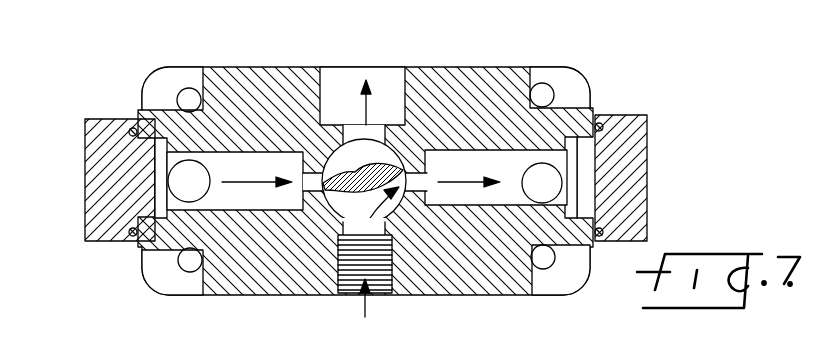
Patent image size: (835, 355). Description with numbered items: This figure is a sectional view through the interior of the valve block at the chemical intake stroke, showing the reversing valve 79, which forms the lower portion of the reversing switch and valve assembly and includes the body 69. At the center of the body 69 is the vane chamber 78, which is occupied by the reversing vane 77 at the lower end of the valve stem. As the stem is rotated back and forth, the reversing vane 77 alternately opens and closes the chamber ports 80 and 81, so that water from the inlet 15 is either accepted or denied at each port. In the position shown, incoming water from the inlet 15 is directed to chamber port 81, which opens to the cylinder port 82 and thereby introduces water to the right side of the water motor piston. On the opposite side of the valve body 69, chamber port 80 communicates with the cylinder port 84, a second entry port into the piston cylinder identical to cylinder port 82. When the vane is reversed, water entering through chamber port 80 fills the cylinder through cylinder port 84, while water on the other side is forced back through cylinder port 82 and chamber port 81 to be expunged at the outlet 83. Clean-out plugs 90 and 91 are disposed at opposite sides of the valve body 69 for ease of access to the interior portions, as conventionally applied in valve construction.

The inlet 15 is at (383, 294).
The body 69 is at (495, 282).
The reversing vane 77 is at (382, 170).
The vane chamber 78 is at (340, 167).
The reversing valve 79 is at (608, 76).
The chamber port 80 is at (257, 170).
The chamber port 81 is at (467, 169).
The cylinder port 82 is at (541, 175).
The outlet 83 is at (362, 68).
The cylinder port 84 is at (201, 172).
The clean-out plug 90 is at (95, 182).
The clean-out plug 91 is at (640, 163).